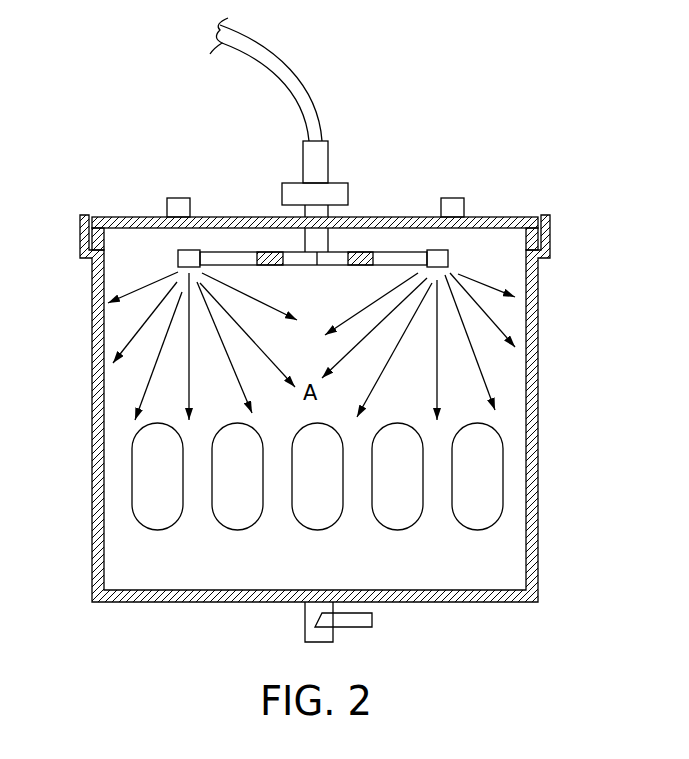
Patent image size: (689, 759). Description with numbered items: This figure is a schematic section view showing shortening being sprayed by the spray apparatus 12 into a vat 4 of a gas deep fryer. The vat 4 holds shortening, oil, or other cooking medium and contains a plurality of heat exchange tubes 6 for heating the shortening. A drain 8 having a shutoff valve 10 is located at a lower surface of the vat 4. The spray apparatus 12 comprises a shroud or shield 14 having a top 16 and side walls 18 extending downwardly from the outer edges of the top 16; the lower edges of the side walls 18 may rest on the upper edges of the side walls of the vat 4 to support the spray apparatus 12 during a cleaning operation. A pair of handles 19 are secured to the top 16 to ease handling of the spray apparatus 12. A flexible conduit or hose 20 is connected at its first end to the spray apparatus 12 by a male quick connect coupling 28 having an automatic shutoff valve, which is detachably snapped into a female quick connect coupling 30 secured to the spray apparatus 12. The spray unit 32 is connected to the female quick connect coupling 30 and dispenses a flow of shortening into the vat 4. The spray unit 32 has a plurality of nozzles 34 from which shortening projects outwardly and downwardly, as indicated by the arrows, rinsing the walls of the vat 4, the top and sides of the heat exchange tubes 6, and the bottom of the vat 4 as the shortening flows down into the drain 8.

The vat 4 is at (92, 540).
The heat exchange tubes 6 is at (470, 514).
The drain 8 is at (305, 625).
The shutoff valve 10 is at (355, 627).
The spray apparatus 12 is at (415, 80).
The shroud or shield 14 is at (497, 216).
The top 16 is at (232, 217).
The side walls 18 is at (525, 242).
The handles 19 is at (178, 198).
The flexible conduit or hose 20 is at (297, 70).
The male quick connect coupling 28 is at (328, 152).
The female quick connect coupling 30 is at (348, 190).
The spray unit 32 is at (392, 265).
The nozzles 34 is at (178, 259).